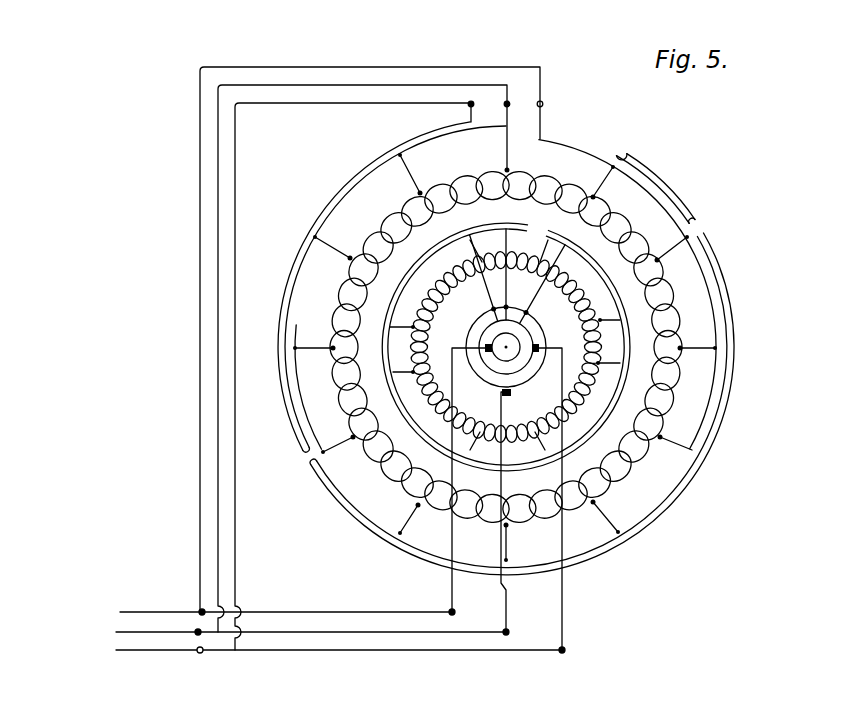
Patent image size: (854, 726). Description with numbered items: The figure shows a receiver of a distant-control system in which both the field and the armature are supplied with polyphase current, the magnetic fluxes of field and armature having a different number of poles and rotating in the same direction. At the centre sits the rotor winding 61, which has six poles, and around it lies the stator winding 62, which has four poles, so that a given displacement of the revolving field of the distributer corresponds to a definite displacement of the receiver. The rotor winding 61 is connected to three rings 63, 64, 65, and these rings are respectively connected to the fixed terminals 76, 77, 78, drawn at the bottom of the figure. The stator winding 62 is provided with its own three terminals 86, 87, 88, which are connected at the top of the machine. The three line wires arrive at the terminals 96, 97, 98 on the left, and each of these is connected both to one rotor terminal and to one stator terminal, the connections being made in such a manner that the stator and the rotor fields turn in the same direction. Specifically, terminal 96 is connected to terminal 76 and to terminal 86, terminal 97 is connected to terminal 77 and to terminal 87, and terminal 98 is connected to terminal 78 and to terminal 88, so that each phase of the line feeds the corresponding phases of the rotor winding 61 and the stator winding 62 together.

The rotor winding 61 is at (577, 273).
The stator winding 62 is at (593, 197).
The ring 63 is at (517, 342).
The ring 64 is at (530, 367).
The ring 65 is at (518, 393).
The fixed terminal 76 is at (452, 484).
The fixed terminal 77 is at (492, 516).
The fixed terminal 78 is at (549, 503).
The stator terminal 86 is at (540, 104).
The stator terminal 87 is at (507, 104).
The stator terminal 88 is at (471, 104).
The line terminal 96 is at (202, 612).
The line terminal 97 is at (198, 632).
The line terminal 98 is at (203, 652).